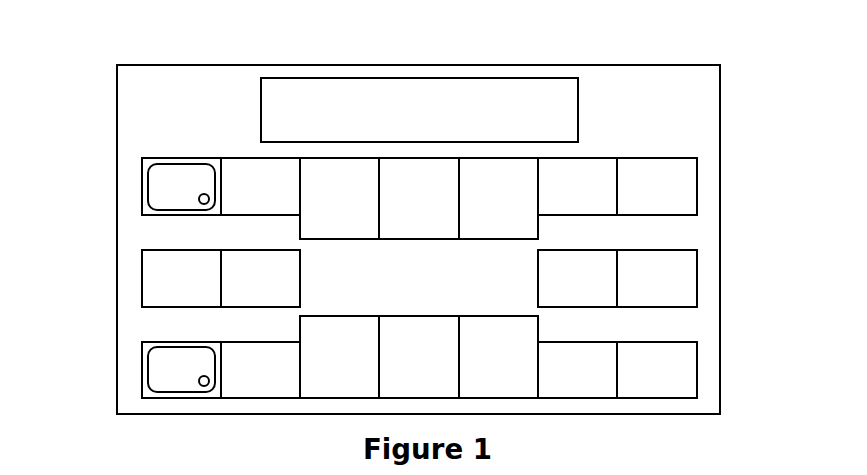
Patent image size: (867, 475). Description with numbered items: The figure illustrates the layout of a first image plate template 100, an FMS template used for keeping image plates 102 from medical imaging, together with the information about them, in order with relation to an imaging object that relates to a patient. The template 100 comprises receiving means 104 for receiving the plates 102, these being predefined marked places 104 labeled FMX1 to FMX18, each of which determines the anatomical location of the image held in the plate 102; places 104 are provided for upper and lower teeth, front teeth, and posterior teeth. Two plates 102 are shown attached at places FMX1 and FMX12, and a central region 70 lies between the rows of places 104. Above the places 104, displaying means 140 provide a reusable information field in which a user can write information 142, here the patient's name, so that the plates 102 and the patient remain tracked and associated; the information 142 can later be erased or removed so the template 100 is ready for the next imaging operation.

The first image plate template 100 is at (721, 128).
The image plate 102 is at (142, 179).
The receiving means 104 is at (697, 276).
The displaying means 140 is at (527, 78).
The information 142 is at (316, 110).
The tile grid area 70 is at (433, 268).